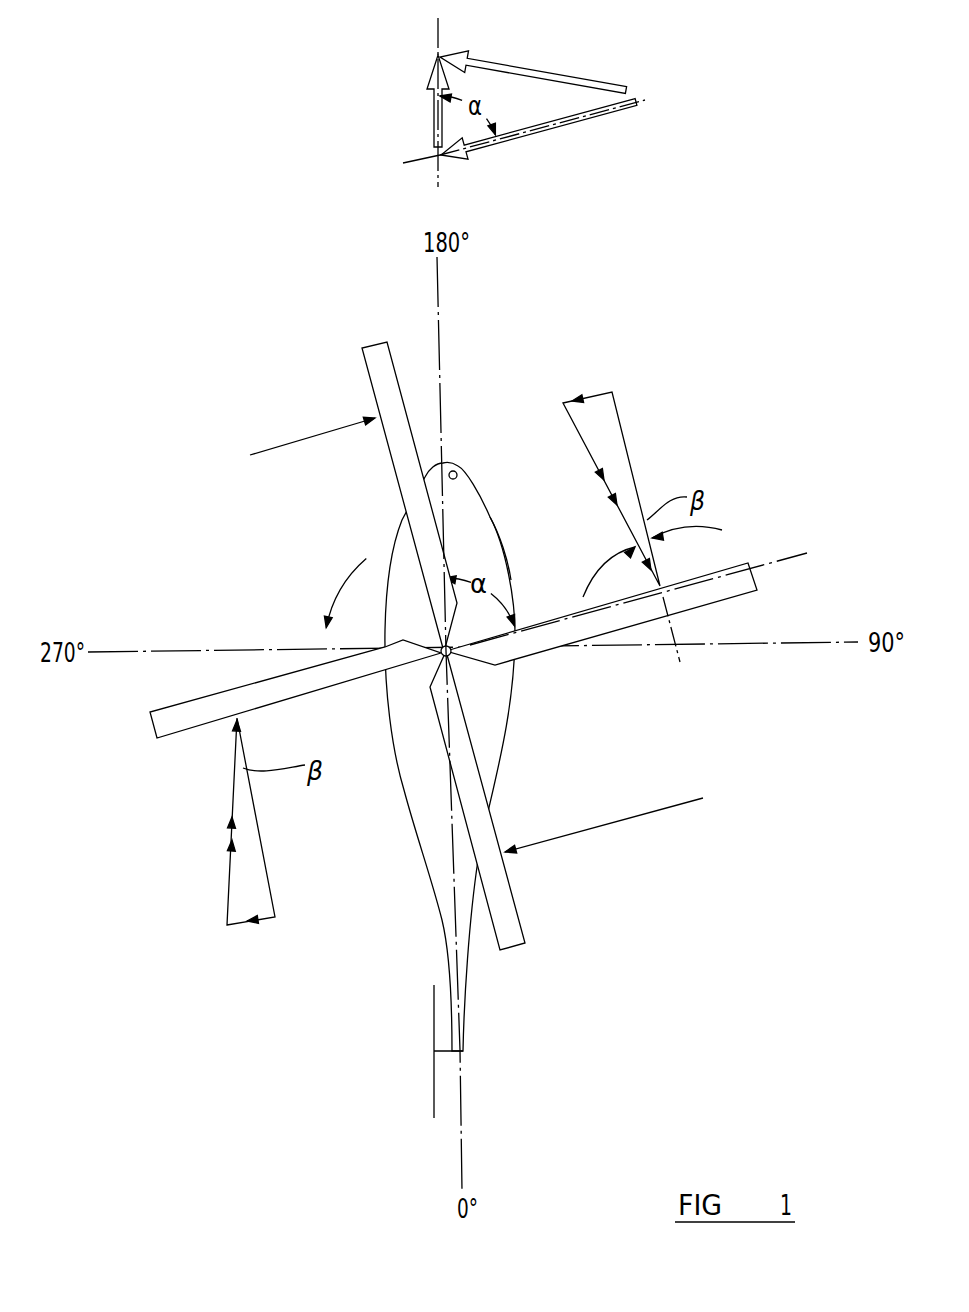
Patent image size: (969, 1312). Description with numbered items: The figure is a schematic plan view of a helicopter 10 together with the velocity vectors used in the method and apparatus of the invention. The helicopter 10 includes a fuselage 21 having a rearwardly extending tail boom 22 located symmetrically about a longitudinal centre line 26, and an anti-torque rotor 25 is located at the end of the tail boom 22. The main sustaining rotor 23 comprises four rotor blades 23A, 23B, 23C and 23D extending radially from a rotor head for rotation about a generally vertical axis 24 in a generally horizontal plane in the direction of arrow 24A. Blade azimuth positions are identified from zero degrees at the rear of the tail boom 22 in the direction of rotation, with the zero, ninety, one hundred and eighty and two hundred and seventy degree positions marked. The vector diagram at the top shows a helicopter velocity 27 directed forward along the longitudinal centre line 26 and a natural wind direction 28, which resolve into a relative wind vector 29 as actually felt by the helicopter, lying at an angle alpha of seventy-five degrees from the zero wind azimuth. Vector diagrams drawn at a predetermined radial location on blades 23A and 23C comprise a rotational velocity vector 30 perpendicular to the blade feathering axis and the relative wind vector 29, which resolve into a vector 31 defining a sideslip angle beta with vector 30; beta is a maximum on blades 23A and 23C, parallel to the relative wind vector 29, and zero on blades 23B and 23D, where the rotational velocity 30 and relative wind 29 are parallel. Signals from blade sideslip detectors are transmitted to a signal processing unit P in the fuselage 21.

The helicopter 10 is at (517, 708).
The fuselage 21 is at (493, 545).
The tail boom 22 is at (463, 1020).
The main sustaining rotor 23 is at (465, 648).
The rotor blade 23A is at (150, 717).
The rotor blade 23B is at (527, 940).
The rotor blade 23C is at (743, 585).
The rotor blade 23D is at (368, 358).
The vertical axis 24 is at (437, 643).
The direction of rotation arrow 24A is at (340, 572).
The anti-torque rotor 25 is at (433, 1093).
The longitudinal centre line 26 is at (437, 312).
The helicopter velocity 27 is at (435, 117).
The natural wind direction 28 is at (580, 76).
The relative wind vector 29 is at (247, 922).
The rotational velocity vector 30 is at (278, 445).
The resolved velocity vector 31 is at (232, 817).
The signal processing unit P is at (462, 467).